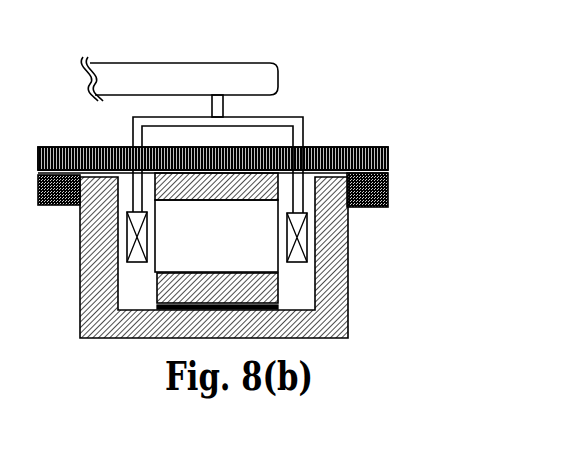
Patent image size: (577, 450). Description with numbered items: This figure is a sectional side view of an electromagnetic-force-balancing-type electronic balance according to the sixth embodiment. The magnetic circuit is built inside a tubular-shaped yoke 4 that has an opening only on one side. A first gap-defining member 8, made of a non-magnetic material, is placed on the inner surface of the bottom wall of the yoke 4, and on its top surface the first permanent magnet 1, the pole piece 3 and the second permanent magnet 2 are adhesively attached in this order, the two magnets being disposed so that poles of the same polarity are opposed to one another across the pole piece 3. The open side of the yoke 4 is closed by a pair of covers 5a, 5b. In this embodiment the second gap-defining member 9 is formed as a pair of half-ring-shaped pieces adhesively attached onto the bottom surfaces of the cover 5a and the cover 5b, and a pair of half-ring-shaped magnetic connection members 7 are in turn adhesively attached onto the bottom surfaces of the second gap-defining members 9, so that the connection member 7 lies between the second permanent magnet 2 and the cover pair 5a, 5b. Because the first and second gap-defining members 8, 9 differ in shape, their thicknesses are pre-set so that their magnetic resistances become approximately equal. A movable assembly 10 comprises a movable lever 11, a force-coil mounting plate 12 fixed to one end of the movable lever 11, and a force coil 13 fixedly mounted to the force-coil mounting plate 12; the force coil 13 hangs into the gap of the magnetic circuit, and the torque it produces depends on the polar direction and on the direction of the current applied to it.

The first permanent magnet 1 is at (280, 283).
The second permanent magnet 2 is at (162, 190).
The pole piece 3 is at (272, 255).
The yoke 4 is at (82, 308).
The cover 5a is at (325, 146).
The cover 5b is at (213, 158).
The connection member 7 is at (388, 181).
The first gap-defining member 8 is at (282, 308).
The second gap-defining member 9 is at (382, 170).
The movable assembly 10 is at (301, 63).
The movable lever 11 is at (107, 92).
The force-coil mounting plate 12 is at (133, 120).
The force coil 13 is at (155, 238).